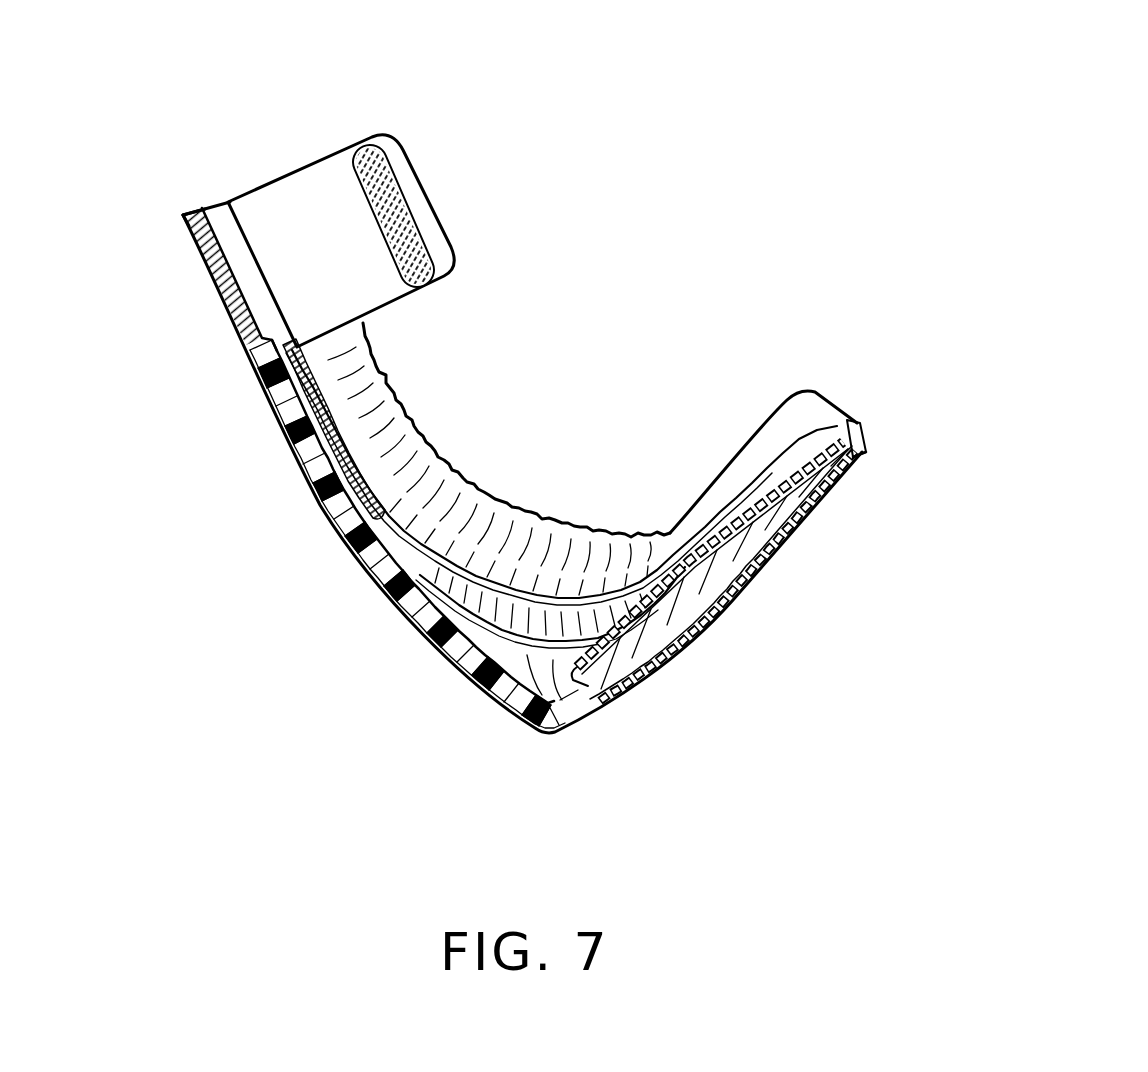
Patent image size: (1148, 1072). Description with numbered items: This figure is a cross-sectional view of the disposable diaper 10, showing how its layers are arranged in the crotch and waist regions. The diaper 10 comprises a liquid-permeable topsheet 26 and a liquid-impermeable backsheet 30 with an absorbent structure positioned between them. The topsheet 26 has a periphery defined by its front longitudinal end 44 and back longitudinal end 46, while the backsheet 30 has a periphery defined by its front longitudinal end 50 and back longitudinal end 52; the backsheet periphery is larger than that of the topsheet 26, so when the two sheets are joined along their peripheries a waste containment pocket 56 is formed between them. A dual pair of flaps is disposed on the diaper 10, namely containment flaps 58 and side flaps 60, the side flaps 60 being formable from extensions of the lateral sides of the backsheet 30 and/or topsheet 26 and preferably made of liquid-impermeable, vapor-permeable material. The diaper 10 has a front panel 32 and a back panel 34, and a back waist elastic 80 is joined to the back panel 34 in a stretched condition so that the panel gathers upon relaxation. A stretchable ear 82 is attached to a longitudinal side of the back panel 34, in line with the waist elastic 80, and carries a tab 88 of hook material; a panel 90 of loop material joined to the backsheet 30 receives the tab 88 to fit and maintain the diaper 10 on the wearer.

The diaper 10 is at (723, 198).
The topsheet 26 is at (273, 410).
The backsheet 30 is at (307, 485).
The front panel 32 is at (722, 673).
The back panel 34 is at (197, 368).
The front longitudinal end 44 is at (857, 420).
The back longitudinal end 46 is at (190, 210).
The front longitudinal end 50 is at (862, 420).
The back longitudinal end 52 is at (183, 215).
The waste containment pocket 56 is at (566, 693).
The containment flaps 58 is at (447, 653).
The side flaps 60 is at (520, 533).
The back waist elastic 80 is at (223, 293).
The stretchable ear 82 is at (332, 103).
The tab 88 is at (405, 208).
The panel 90 is at (805, 518).